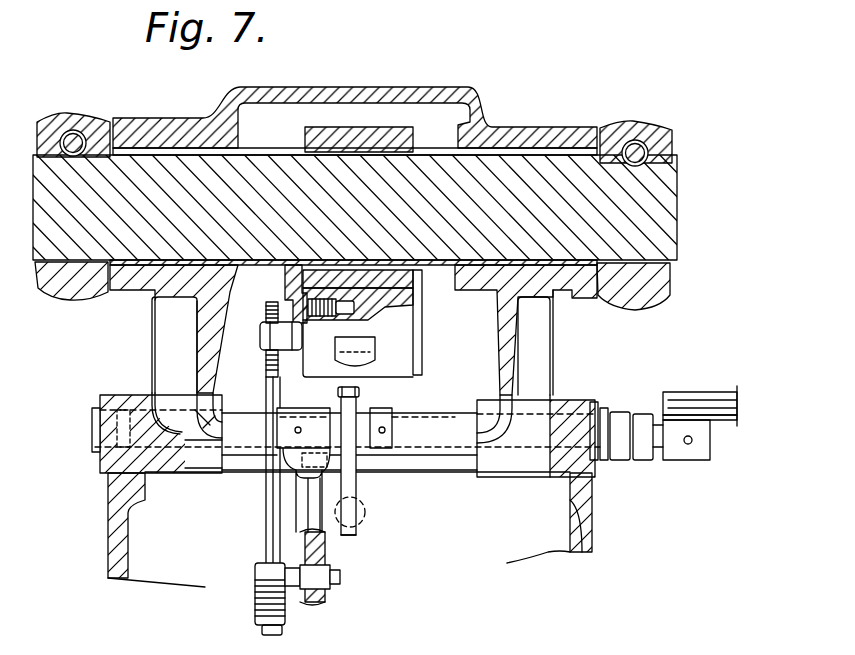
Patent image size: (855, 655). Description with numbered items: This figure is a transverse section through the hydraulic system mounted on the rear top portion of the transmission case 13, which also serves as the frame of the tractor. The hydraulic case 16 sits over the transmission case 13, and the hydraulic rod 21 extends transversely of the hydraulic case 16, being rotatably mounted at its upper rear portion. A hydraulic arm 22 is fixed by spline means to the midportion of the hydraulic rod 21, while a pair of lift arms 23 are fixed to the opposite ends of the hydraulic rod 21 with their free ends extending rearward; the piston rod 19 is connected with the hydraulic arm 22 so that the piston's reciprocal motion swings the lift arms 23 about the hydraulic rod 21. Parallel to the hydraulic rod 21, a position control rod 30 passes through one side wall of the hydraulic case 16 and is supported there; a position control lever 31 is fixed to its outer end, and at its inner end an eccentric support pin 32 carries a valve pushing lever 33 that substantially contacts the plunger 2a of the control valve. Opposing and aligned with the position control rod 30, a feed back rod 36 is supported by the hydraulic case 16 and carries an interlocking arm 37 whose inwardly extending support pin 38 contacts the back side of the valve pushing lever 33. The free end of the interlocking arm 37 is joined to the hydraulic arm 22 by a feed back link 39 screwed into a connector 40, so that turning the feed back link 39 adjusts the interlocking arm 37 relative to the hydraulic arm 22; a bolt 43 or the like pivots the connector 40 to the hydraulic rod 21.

The plunger 2a is at (363, 513).
The transmission case 13 is at (108, 512).
The hydraulic case 16 is at (375, 88).
The piston rod 19 is at (367, 357).
The hydraulic rod 21 is at (668, 200).
The hydraulic arm 22 is at (403, 328).
The lift arms 23 is at (92, 117).
The position control rod 30 is at (453, 440).
The position control lever 31 is at (677, 393).
The support pin 32 is at (337, 400).
The valve pushing lever 33 is at (352, 535).
The feed back rod 36 is at (237, 442).
The interlocking arm 37 is at (312, 602).
The support pin 38 is at (353, 460).
The feed back link 39 is at (267, 537).
The connector 40 is at (262, 338).
The bolt 43 is at (290, 297).